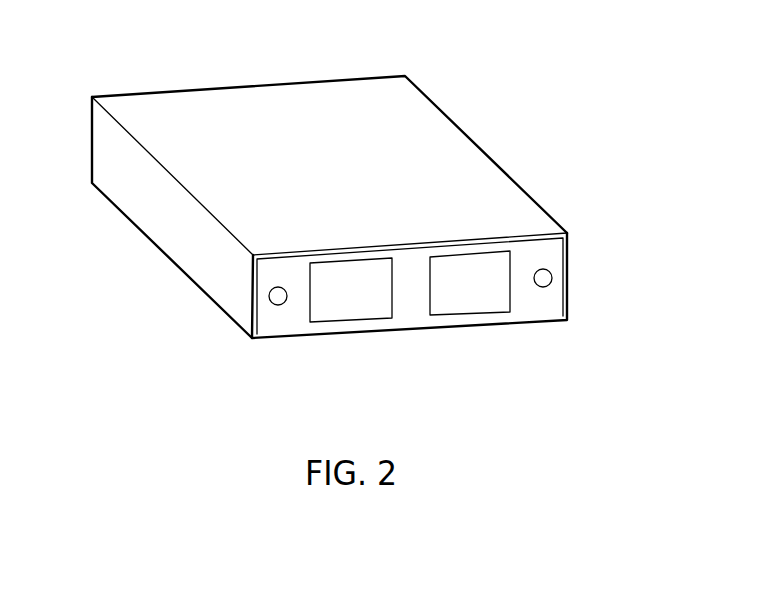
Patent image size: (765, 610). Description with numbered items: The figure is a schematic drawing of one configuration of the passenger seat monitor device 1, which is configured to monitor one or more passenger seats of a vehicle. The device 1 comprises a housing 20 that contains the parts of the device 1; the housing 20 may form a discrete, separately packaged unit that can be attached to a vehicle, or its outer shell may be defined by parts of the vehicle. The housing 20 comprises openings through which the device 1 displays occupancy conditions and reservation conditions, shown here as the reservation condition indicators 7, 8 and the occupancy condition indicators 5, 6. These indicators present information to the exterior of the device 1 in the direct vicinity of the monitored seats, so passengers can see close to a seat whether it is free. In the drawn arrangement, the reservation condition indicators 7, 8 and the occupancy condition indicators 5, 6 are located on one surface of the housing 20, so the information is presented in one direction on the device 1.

The device 1 is at (340, 182).
The housing 20 is at (305, 103).
The occupancy condition indicator 5 is at (277, 305).
The occupancy condition indicator 6 is at (543, 287).
The reservation condition indicator 7 is at (352, 305).
The reservation condition indicator 8 is at (472, 297).